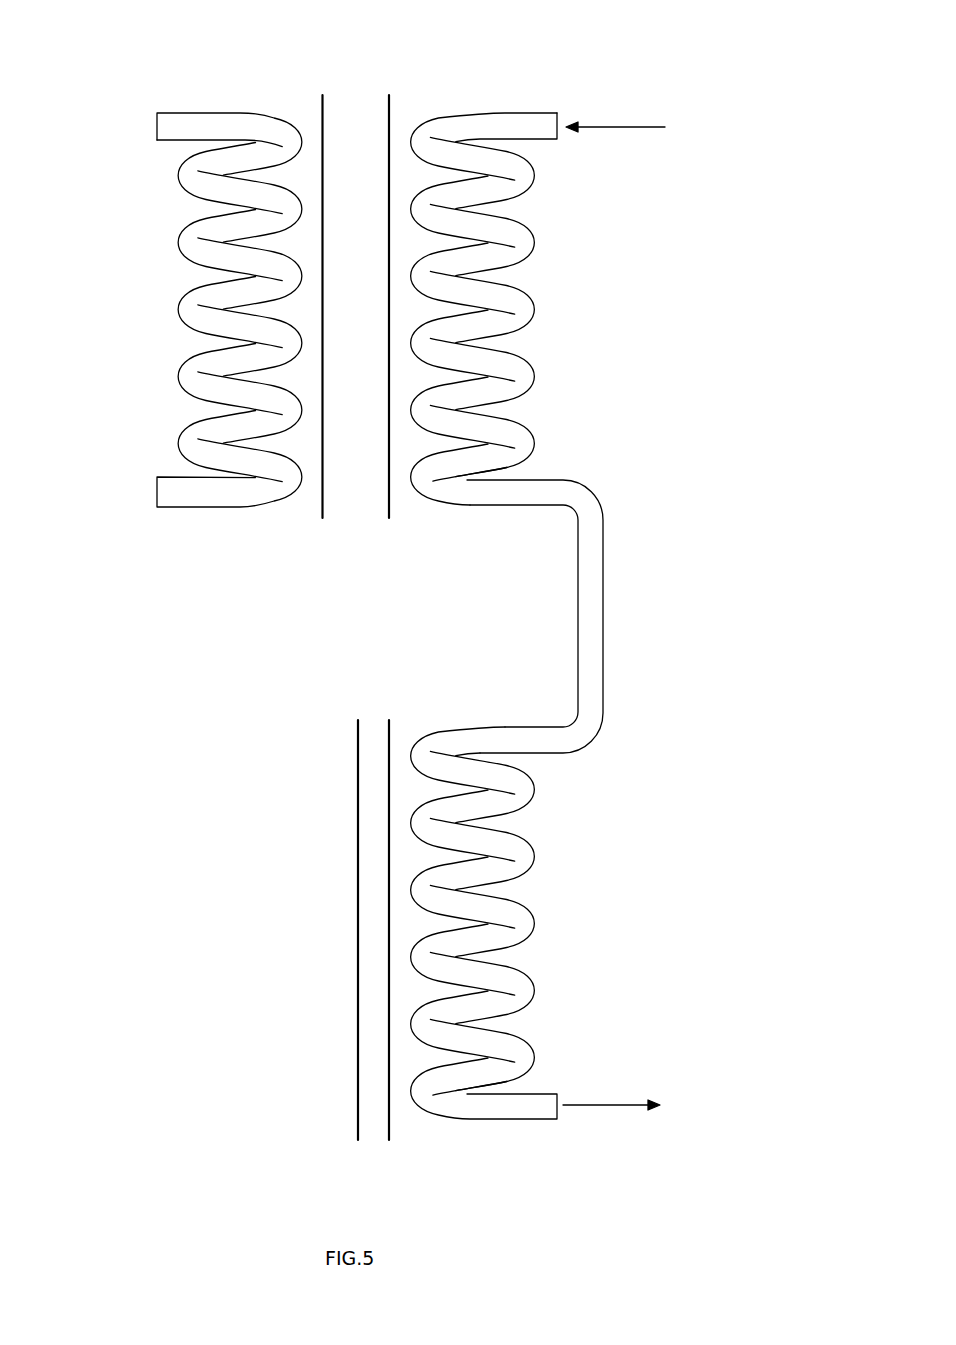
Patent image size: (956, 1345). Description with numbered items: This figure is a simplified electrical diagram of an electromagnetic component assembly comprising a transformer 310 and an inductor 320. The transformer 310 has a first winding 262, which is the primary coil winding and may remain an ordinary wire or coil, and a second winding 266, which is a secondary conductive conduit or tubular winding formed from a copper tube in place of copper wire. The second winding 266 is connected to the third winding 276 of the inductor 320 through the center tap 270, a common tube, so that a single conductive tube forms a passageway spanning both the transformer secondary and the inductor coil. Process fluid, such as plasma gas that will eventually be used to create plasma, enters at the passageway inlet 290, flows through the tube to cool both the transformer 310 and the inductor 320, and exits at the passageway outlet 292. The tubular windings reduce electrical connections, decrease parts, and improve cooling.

The transformer 310 is at (163, 47).
The inductor 320 is at (303, 1072).
The first winding 262 is at (193, 510).
The second winding 266 is at (536, 322).
The center tap 270 is at (614, 670).
The third winding 276 is at (536, 905).
The passageway inlet 290 is at (622, 121).
The passageway outlet 292 is at (608, 1112).